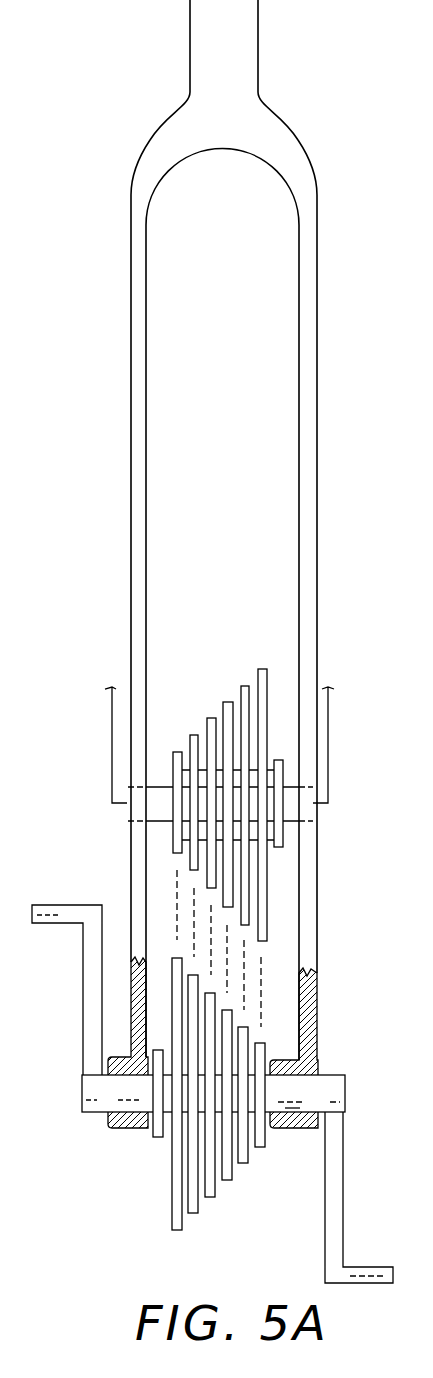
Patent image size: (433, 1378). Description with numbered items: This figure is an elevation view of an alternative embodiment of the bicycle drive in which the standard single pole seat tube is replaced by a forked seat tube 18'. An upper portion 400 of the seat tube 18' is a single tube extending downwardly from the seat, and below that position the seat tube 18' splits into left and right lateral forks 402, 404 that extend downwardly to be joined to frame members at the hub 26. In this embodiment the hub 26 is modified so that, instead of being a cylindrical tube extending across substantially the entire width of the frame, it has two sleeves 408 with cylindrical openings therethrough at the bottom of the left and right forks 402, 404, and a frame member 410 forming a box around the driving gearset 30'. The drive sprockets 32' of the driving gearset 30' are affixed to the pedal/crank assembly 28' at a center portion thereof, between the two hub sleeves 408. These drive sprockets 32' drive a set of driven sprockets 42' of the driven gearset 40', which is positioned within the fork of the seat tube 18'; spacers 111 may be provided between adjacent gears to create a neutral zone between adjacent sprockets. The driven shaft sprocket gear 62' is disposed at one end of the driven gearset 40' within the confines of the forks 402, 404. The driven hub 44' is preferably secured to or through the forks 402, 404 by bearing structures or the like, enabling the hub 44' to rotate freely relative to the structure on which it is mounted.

The forked seat tube 18' is at (227, 530).
The upper portion 400 is at (215, 48).
The left lateral fork 402 is at (140, 340).
The right lateral fork 404 is at (305, 297).
The driven gearset 40' is at (219, 738).
The spacer 111 is at (184, 757).
The driven sprockets 42' is at (286, 789).
The driven hub 44' is at (179, 812).
The driven shaft sprocket gear 62' is at (333, 804).
The drive sprockets 32' is at (265, 1094).
The driving gearset 30' is at (240, 1120).
The sleeves 408 is at (130, 1128).
The frame member 410 is at (290, 1120).
The hub 26 is at (305, 1112).
The pedal/crank assembly 28' is at (370, 1197).